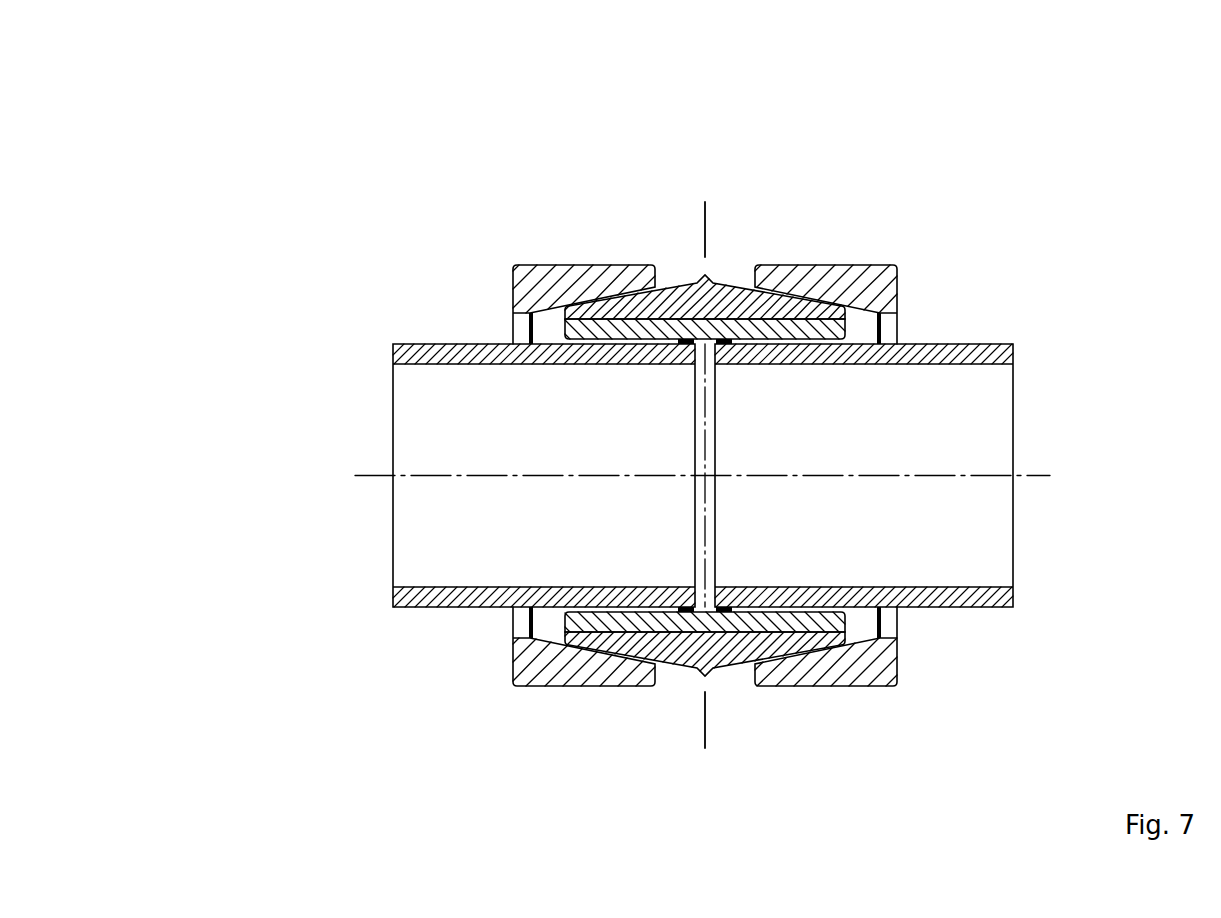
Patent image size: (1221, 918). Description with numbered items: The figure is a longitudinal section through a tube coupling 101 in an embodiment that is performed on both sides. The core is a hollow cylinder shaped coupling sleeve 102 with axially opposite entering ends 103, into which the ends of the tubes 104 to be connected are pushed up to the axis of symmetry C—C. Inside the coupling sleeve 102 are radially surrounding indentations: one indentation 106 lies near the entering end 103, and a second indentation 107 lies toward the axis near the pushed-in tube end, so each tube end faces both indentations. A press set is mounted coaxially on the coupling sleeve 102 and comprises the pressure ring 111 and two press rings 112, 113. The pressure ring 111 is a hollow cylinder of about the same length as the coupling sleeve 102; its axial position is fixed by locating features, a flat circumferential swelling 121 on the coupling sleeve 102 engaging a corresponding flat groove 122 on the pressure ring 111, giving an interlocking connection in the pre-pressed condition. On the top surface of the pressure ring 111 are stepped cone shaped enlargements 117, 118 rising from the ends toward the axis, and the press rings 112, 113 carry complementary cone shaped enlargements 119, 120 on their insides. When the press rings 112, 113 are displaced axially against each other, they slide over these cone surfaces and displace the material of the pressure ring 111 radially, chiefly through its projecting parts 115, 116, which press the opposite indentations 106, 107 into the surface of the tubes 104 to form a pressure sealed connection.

The tube coupling 101 is at (950, 93).
The coupling sleeve 102 is at (697, 333).
The entering end 103 is at (515, 657).
The tube 104 is at (405, 352).
The indentation 106 is at (582, 338).
The indentation 107 is at (772, 296).
The pressure ring 111 is at (722, 303).
The press ring 112 is at (567, 283).
The press ring 113 is at (845, 280).
The projecting part 115 is at (580, 645).
The projecting part 116 is at (727, 634).
The cone shaped enlargement 117 is at (675, 667).
The cone shaped enlargement 118 is at (758, 684).
The cone shaped enlargement 119 is at (567, 621).
The cone shaped enlargement 120 is at (845, 623).
The circumferential swelling 121 is at (563, 320).
The groove 122 is at (563, 308).